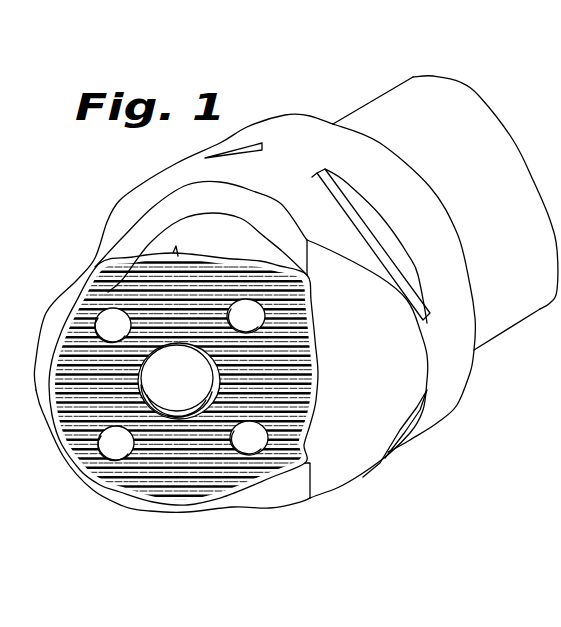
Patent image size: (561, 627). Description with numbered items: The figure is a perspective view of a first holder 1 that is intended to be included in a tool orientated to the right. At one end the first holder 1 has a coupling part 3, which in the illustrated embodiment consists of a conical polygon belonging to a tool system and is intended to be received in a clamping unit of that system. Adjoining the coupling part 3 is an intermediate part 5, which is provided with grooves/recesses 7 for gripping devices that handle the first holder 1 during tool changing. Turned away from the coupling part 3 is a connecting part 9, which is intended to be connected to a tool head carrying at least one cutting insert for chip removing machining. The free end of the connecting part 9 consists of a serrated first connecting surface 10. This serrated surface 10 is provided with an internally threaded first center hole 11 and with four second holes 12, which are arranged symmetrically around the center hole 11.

The first holder 1 is at (361, 89).
The coupling part 3 is at (511, 311).
The intermediate part 5 is at (247, 124).
The grooves/recesses 7 is at (408, 265).
The connecting part 9 is at (183, 233).
The first connecting surface 10 is at (147, 480).
The first center hole 11 is at (173, 380).
The second holes 12 is at (115, 446).